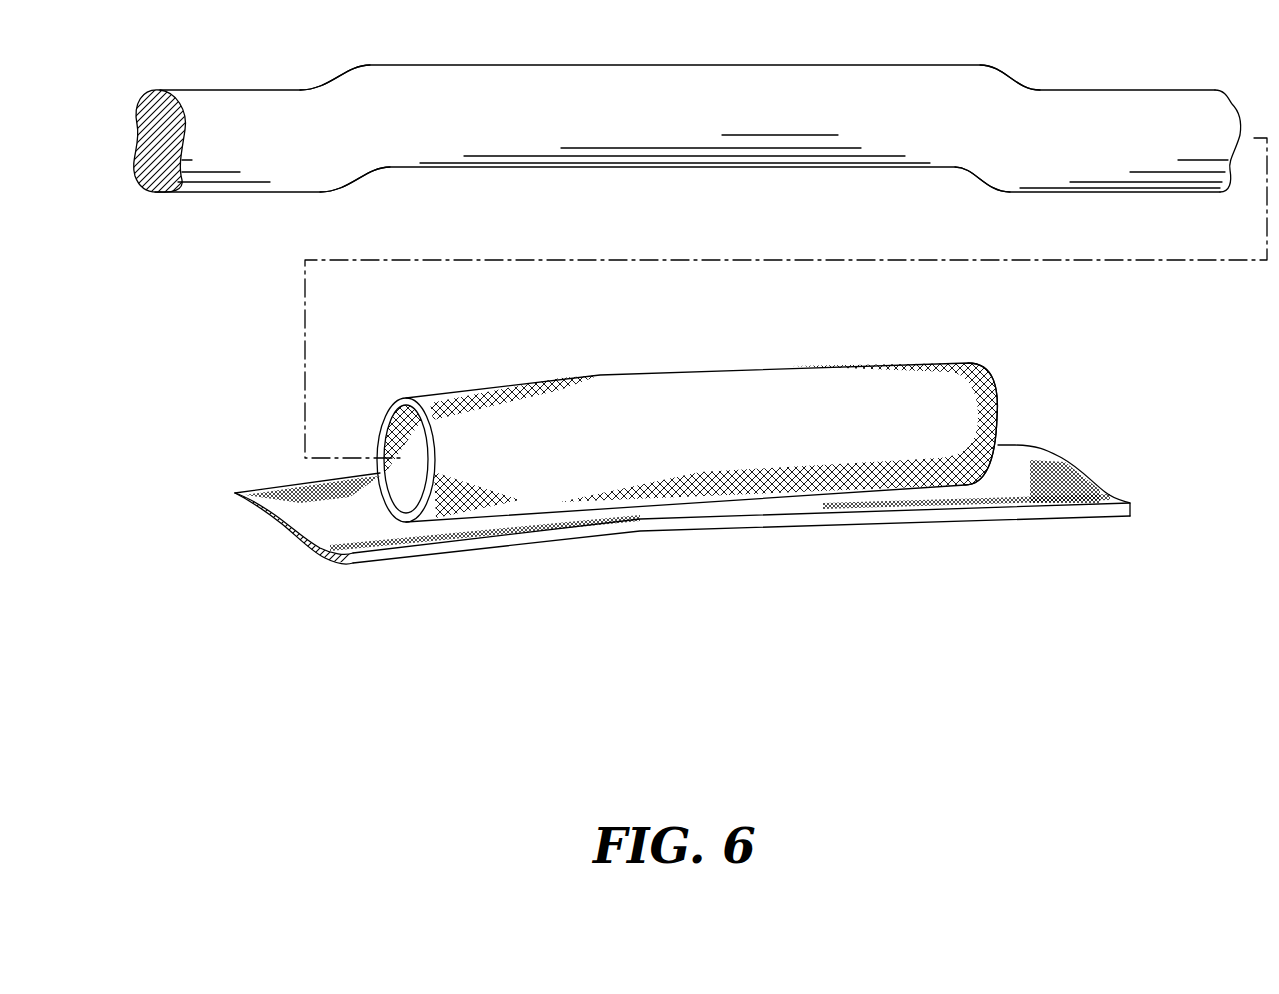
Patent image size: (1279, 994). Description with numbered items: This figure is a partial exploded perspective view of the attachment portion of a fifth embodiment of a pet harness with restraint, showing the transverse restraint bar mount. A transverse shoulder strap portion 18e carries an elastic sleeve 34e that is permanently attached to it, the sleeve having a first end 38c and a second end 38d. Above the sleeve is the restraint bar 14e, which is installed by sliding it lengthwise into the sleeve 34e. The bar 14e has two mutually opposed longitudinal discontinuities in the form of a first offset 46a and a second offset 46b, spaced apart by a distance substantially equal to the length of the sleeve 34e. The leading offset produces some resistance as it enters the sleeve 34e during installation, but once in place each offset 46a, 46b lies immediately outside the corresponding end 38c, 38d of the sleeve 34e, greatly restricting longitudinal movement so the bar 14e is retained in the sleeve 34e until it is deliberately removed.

The restraint bar 14e is at (540, 65).
The first offset 46a is at (330, 78).
The second offset 46b is at (1015, 78).
The elastic sleeve 34e is at (688, 423).
The end of the sleeve 38c is at (385, 417).
The end of the sleeve 38d is at (993, 385).
The transverse shoulder strap portion 18e is at (728, 527).